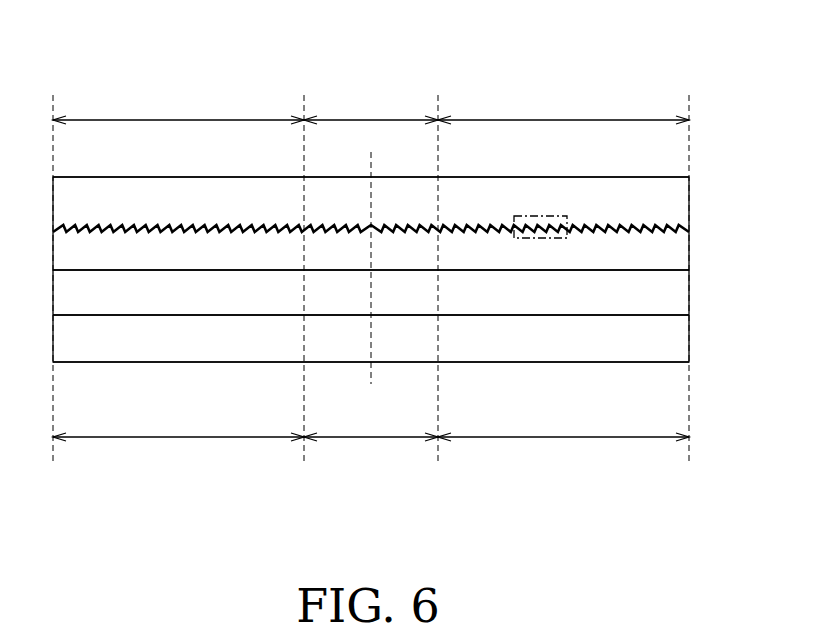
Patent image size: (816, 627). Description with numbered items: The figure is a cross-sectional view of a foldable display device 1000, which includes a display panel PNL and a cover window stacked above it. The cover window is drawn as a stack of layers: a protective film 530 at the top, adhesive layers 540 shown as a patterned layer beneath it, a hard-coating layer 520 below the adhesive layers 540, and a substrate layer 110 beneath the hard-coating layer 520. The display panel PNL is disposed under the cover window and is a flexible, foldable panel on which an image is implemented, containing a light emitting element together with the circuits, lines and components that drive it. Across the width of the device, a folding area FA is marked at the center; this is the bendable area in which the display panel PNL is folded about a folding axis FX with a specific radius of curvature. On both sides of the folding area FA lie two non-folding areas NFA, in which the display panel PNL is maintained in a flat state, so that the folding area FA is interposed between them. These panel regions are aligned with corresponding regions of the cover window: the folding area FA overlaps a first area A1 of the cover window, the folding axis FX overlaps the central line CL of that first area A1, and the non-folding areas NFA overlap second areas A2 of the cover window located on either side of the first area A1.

The foldable display device 1000 is at (682, 40).
The protective film 530 is at (674, 200).
The adhesive layers 540 is at (683, 224).
The hard-coating layer 520 is at (674, 250).
The substrate layer 110 is at (674, 297).
The display panel PNL is at (674, 339).
The central line CL is at (371, 245).
The folding axis FX is at (371, 388).
The first area A1 is at (371, 107).
The second areas A2 is at (371, 107).
The folding area FA is at (371, 450).
The non-folding area NFA is at (371, 450).